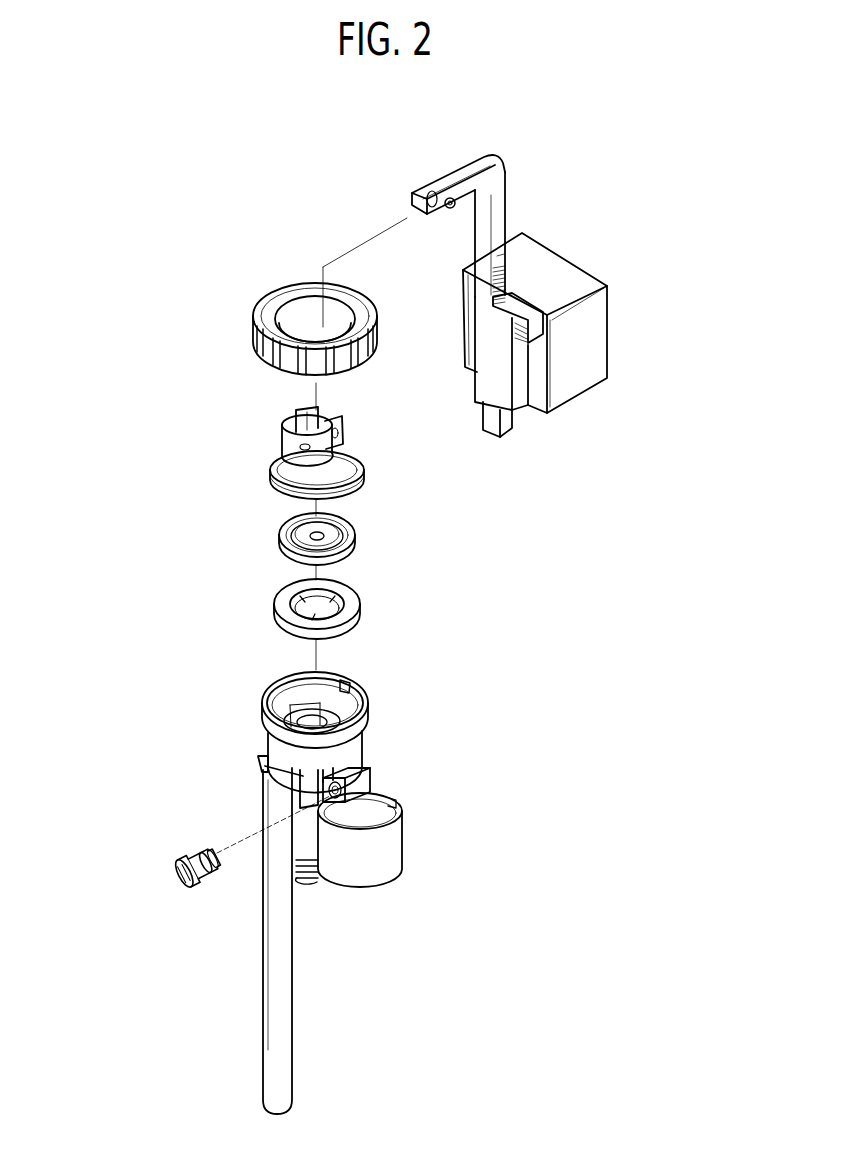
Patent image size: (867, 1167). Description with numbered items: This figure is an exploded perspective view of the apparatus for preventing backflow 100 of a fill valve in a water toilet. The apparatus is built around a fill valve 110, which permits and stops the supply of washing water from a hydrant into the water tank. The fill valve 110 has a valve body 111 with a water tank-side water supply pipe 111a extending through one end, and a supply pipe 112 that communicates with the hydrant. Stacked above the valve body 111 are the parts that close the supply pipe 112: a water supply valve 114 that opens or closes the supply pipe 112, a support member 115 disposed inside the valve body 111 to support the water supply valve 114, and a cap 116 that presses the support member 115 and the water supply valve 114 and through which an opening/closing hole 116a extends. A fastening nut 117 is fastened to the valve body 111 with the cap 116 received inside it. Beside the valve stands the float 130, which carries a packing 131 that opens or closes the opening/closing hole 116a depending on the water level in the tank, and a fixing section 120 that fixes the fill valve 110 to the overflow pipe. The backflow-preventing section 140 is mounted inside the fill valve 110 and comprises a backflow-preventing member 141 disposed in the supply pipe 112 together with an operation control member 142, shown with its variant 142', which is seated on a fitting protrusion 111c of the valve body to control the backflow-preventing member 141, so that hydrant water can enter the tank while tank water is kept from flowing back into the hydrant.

The apparatus for preventing backflow 100 is at (185, 354).
The fill valve 110 is at (254, 692).
The valve body 111 is at (275, 749).
The water tank-side water supply pipe 111a is at (276, 1004).
The fitting protrusion 111c is at (344, 684).
The supply pipe 112 is at (355, 719).
The water supply valve 114 is at (355, 537).
The support member 115 is at (355, 605).
The cap 116 is at (350, 459).
The opening/closing hole 116a is at (296, 449).
The fastening nut 117 is at (291, 281).
The fixing section 120 is at (395, 850).
The float 130 is at (585, 334).
The packing 131 is at (428, 191).
The backflow-preventing section 140 is at (164, 874).
The backflow-preventing member 141 is at (356, 787).
The operation control member 142 is at (147, 892).
The fitting tip 142' is at (185, 834).